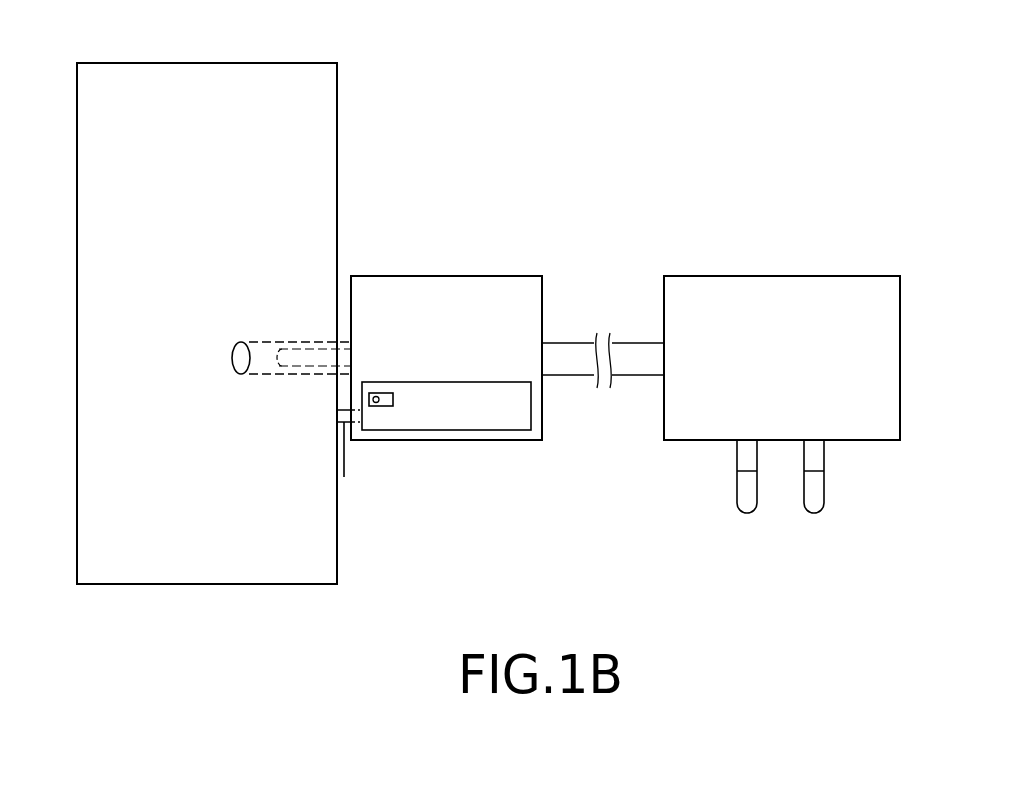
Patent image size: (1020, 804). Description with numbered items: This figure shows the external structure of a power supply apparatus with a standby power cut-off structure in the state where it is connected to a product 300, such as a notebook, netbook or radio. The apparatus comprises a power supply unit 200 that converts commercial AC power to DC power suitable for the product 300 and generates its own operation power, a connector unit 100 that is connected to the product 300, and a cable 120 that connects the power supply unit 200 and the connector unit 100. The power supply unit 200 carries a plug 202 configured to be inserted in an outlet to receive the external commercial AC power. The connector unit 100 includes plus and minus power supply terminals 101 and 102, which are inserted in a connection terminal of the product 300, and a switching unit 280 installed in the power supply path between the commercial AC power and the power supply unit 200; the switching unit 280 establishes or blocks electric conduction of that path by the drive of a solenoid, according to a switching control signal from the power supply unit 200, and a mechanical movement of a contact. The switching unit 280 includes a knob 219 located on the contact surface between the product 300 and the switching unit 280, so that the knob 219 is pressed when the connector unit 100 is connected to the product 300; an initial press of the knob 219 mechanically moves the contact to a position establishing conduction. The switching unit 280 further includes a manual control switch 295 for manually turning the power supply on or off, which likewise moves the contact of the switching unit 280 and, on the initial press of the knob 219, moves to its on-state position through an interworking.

The product 300 is at (205, 62).
The connector unit 100 is at (442, 276).
The switching unit 280 is at (456, 430).
The manual control switch 295 is at (376, 405).
The knob 219 is at (344, 477).
The power supply terminal 101 is at (260, 340).
The power supply terminal 102 is at (298, 348).
The cable 120 is at (628, 341).
The power supply unit 200 is at (780, 276).
The plug 202 is at (746, 513).